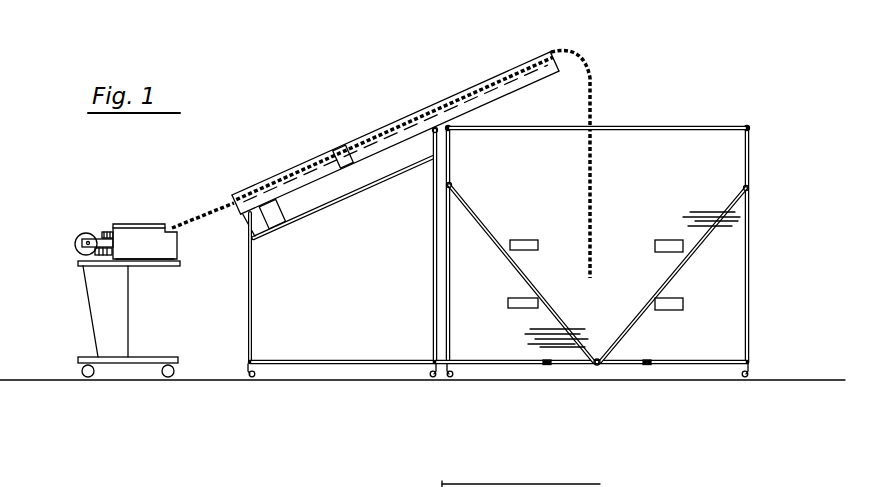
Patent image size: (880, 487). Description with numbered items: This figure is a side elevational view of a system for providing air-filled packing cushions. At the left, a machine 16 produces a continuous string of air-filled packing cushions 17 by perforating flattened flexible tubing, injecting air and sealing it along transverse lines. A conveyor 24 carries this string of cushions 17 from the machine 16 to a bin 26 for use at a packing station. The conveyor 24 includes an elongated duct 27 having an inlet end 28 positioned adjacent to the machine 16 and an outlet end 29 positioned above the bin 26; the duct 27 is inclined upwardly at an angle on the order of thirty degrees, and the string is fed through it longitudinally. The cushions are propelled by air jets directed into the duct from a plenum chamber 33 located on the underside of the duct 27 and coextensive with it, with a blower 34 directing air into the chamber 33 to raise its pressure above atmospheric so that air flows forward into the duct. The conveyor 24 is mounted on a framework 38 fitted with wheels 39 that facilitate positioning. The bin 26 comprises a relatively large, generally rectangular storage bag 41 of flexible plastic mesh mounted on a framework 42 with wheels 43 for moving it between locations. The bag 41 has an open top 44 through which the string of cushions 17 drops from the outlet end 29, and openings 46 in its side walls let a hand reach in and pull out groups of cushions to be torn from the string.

The machine 16 is at (104, 216).
The string of air-filled packing cushions 17 is at (195, 213).
The conveyor 24 is at (366, 134).
The bin 26 is at (688, 146).
The elongated duct 27 is at (407, 118).
The inlet end 28 is at (233, 207).
The outlet end 29 is at (551, 52).
The plenum chamber 33 is at (358, 156).
The blower 34 is at (273, 218).
The framework 38 is at (262, 311).
The wheels 39 is at (258, 380).
The storage bag 41 is at (632, 142).
The framework 42 is at (750, 264).
The wheels 43 is at (455, 380).
The open top 44 is at (575, 117).
The openings 46 is at (522, 240).